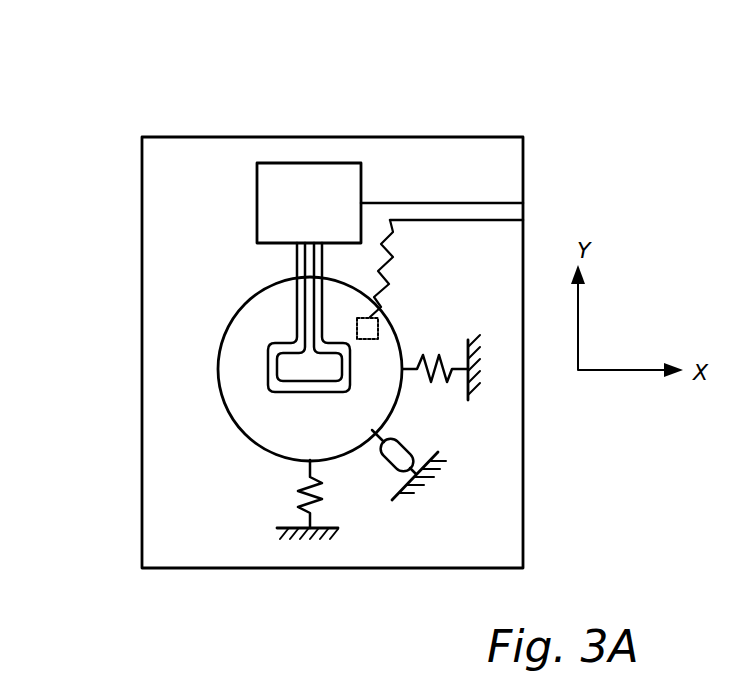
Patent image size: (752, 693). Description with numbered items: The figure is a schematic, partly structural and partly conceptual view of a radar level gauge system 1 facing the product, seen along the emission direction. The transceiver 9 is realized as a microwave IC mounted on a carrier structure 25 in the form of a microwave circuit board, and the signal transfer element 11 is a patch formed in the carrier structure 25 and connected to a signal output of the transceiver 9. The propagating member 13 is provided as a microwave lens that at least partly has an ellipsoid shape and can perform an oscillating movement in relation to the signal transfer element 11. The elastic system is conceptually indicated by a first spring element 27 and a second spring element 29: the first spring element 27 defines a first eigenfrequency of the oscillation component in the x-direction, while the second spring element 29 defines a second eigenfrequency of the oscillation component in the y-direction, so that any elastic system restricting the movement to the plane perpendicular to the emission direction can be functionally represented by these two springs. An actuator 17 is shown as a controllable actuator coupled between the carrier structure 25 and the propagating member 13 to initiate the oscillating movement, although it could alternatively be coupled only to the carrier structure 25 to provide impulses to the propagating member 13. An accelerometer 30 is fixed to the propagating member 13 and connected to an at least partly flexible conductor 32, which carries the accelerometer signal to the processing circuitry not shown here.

The radar level gauge system 1 is at (500, 73).
The transceiver 9 is at (310, 180).
The signal transfer element 11 is at (290, 368).
The propagating member 13 is at (258, 422).
The actuator 17 is at (378, 505).
The carrier structure 25 is at (168, 190).
The first spring element 27 is at (444, 322).
The second spring element 29 is at (270, 506).
The accelerometer 30 is at (378, 330).
The at least partly flexible conductor 32 is at (498, 220).